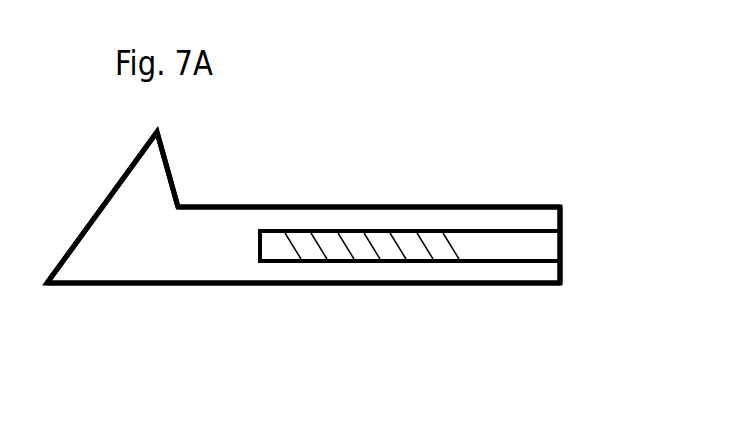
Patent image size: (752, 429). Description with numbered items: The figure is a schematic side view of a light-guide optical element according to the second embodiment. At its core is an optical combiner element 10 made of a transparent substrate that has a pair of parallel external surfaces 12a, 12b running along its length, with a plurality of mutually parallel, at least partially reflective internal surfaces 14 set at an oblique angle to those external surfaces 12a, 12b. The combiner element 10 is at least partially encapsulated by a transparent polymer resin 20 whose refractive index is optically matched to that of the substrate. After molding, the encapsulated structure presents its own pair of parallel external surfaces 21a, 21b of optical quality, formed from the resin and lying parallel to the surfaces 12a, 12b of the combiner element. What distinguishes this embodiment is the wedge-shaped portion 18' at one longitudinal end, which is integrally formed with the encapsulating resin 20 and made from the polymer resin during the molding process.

The optical combiner element 10 is at (481, 259).
The external surface 12a is at (423, 229).
The external surface 12b is at (425, 262).
The partially reflective internal surfaces 14 is at (369, 256).
The wedge-shaped portion 18' is at (109, 194).
The transparent polymer resin 20 is at (228, 257).
The external surface of the encapsulated structure 21a is at (533, 203).
The external surface of the encapsulated structure 21b is at (547, 285).